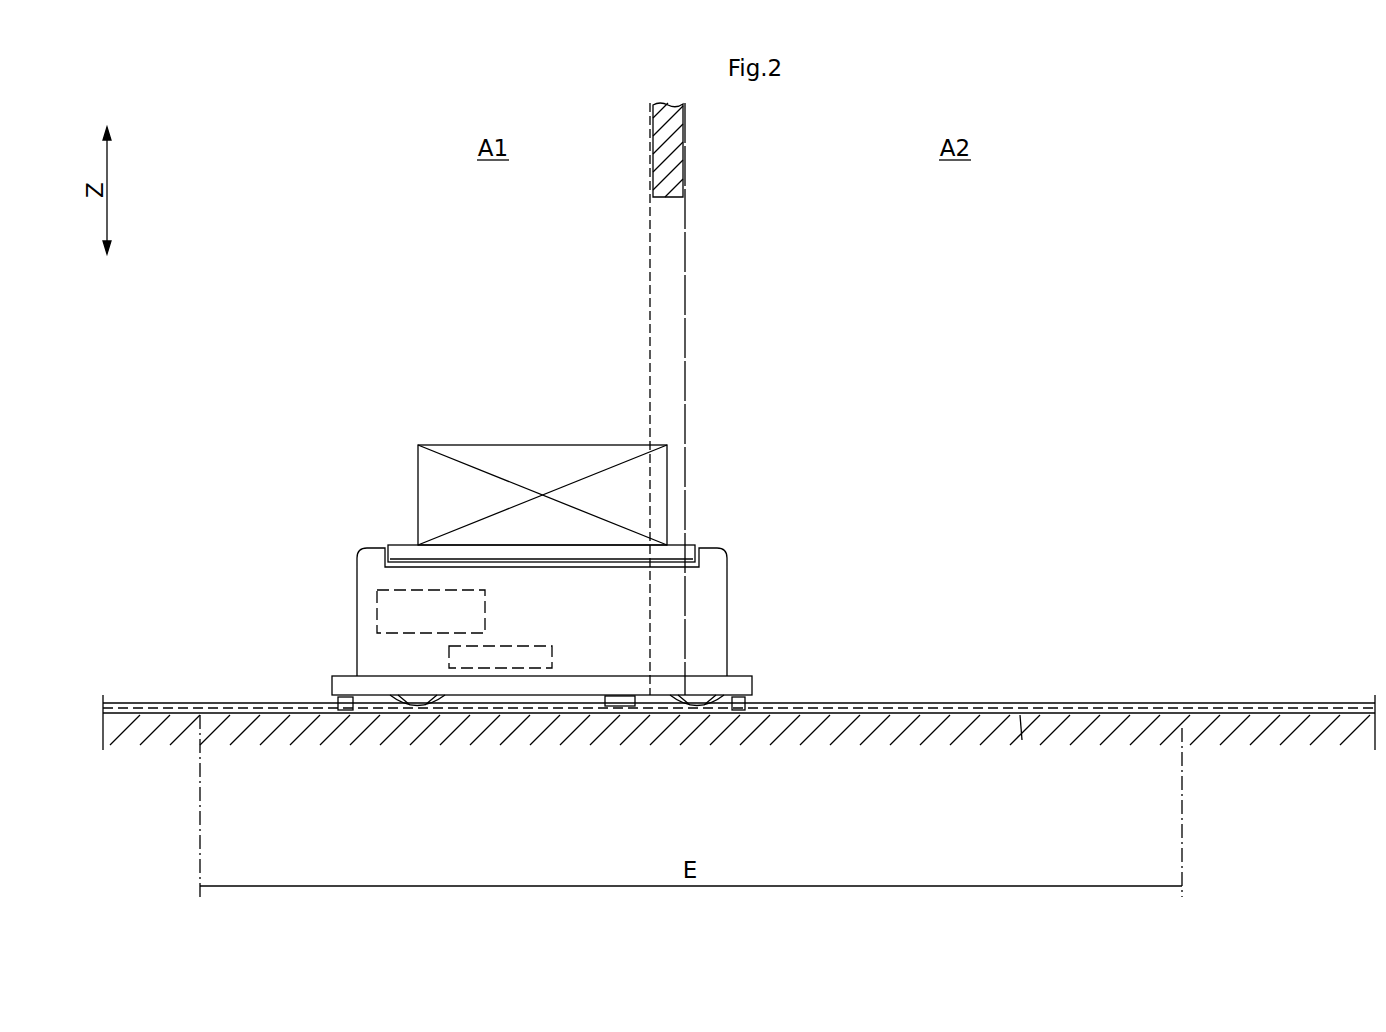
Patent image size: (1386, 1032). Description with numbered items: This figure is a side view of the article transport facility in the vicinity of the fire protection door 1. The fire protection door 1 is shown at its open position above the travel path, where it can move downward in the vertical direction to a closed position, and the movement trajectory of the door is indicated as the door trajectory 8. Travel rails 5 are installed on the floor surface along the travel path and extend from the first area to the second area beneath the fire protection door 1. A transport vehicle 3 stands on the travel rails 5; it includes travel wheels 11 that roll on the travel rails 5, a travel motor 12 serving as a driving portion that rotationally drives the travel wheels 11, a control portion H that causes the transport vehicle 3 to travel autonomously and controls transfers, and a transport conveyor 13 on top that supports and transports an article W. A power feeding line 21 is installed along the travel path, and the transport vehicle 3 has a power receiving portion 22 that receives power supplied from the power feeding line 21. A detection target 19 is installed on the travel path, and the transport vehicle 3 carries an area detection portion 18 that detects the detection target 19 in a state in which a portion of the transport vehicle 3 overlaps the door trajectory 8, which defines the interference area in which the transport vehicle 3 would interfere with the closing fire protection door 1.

The fire protection door 1 is at (685, 150).
The door trajectory 8 is at (685, 352).
The transport vehicle 3 is at (787, 537).
The transport conveyor 13 is at (403, 537).
The travel motor 12 is at (449, 652).
The area detection portion 18 is at (340, 700).
The travel wheels 11 is at (400, 713).
The power receiving portion 22 is at (620, 713).
The detection target 19 is at (1022, 715).
The travel rails 5 is at (1090, 703).
The power feeding line 21 is at (1292, 703).
The article W is at (518, 446).
The control portion H is at (377, 610).